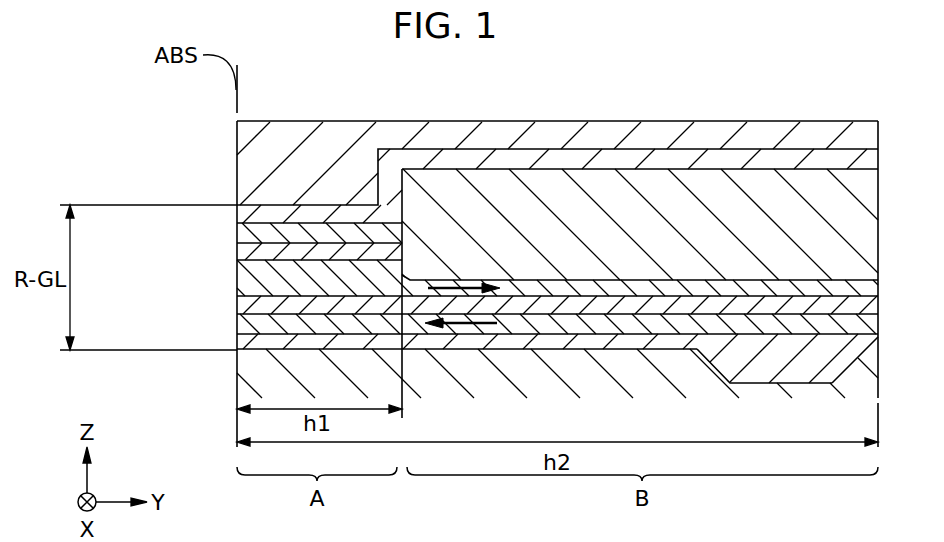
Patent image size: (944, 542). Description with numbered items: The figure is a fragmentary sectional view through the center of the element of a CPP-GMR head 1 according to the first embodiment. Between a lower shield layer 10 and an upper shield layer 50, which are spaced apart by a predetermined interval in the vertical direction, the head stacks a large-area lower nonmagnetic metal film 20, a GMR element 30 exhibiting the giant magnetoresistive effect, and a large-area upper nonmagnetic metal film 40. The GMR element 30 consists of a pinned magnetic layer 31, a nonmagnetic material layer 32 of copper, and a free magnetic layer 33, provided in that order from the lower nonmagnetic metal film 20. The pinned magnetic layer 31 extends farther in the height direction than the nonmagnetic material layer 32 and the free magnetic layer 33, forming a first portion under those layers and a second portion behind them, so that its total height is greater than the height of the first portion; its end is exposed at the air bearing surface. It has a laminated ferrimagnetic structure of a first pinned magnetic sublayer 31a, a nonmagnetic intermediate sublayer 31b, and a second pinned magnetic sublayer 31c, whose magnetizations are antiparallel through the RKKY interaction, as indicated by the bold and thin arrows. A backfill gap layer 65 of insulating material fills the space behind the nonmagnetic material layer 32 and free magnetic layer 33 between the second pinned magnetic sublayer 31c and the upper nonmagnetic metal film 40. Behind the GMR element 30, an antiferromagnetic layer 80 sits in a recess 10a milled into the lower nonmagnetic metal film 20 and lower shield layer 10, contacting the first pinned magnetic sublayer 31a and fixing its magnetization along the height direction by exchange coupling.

The CPP-GMR head 1 is at (554, 73).
The lower shield layer 10 is at (242, 384).
The recess 10a is at (846, 358).
The large-area lower nonmagnetic metal film 20 is at (237, 342).
The GMR element 30 is at (478, 277).
The pinned magnetic layer 31 is at (499, 301).
The first pinned magnetic sublayer 31a is at (517, 327).
The nonmagnetic intermediate sublayer 31b is at (247, 304).
The second pinned magnetic sublayer 31c is at (247, 278).
The nonmagnetic material layer 32 is at (247, 251).
The free magnetic layer 33 is at (247, 232).
The large-area upper nonmagnetic metal film 40 is at (240, 214).
The upper shield layer 50 is at (248, 183).
The backfill gap layer 65 is at (661, 183).
The antiferromagnetic layer 80 is at (766, 378).